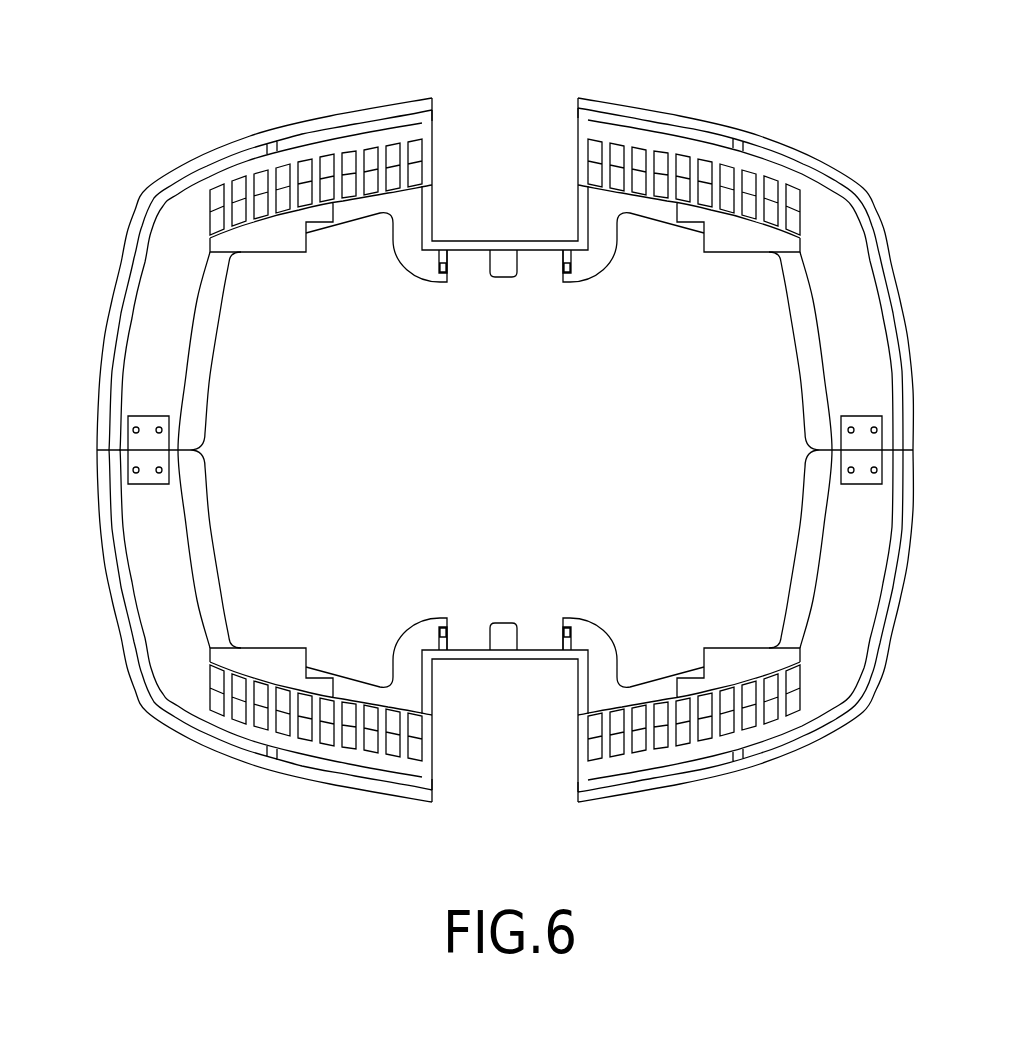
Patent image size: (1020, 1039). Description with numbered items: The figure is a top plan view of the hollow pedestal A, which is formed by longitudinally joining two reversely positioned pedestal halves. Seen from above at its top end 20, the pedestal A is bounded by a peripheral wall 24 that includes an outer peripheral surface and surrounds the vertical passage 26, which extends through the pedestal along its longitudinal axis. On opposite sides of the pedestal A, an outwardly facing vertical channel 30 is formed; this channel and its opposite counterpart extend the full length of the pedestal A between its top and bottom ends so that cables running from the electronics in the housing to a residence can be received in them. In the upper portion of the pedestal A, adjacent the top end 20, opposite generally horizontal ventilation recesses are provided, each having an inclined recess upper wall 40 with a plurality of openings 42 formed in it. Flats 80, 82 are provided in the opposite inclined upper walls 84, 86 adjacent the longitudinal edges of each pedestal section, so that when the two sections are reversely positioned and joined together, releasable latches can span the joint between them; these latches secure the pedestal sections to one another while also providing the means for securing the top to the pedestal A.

The top end 20 is at (165, 182).
The peripheral wall 24 is at (880, 248).
The vertical passage 26 is at (272, 450).
The vertical channel 30 is at (432, 188).
The inclined recess upper wall 40 is at (377, 138).
The slot 42 is at (290, 167).
The flat 80 is at (845, 438).
The flat 82 is at (157, 442).
The inclined upper wall 84 is at (852, 357).
The inclined upper wall 86 is at (173, 362).
The hollow pedestal A is at (493, 455).